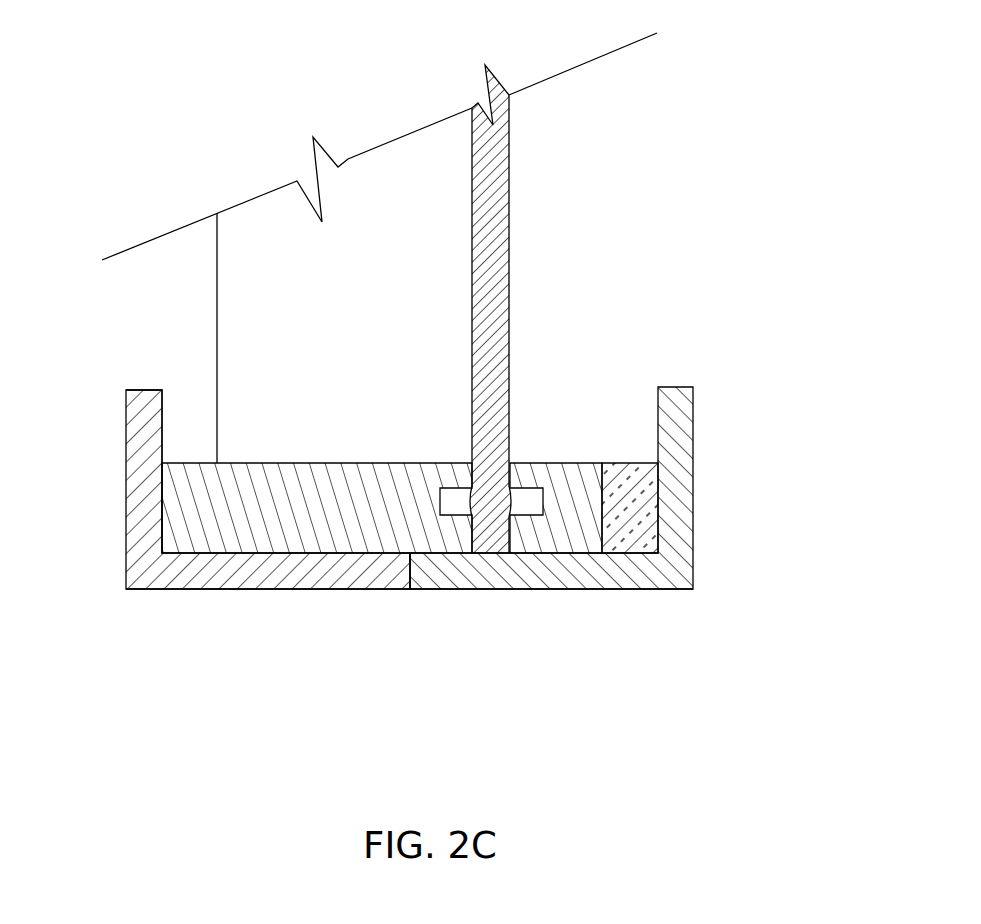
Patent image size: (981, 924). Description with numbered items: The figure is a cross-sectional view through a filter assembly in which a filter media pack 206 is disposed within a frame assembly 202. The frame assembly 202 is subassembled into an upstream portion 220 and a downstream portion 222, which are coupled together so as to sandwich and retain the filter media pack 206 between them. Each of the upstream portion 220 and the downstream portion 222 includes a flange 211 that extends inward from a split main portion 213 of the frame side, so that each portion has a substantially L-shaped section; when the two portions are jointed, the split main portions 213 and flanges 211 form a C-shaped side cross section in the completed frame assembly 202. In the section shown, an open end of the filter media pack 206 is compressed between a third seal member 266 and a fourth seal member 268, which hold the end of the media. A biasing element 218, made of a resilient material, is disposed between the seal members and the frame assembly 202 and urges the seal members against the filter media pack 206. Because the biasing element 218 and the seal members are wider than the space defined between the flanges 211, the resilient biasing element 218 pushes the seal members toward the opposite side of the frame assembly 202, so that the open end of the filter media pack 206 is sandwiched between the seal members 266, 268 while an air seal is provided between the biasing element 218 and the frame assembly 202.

The frame assembly 202 is at (411, 553).
The filter media pack 206 is at (509, 188).
The flange 211 is at (143, 440).
The split main portion 213 is at (270, 580).
The biasing element 218 is at (630, 460).
The upstream portion 220 is at (490, 412).
The downstream portion 222 is at (123, 488).
The third seal member 266 is at (268, 462).
The fourth seal member 268 is at (562, 460).